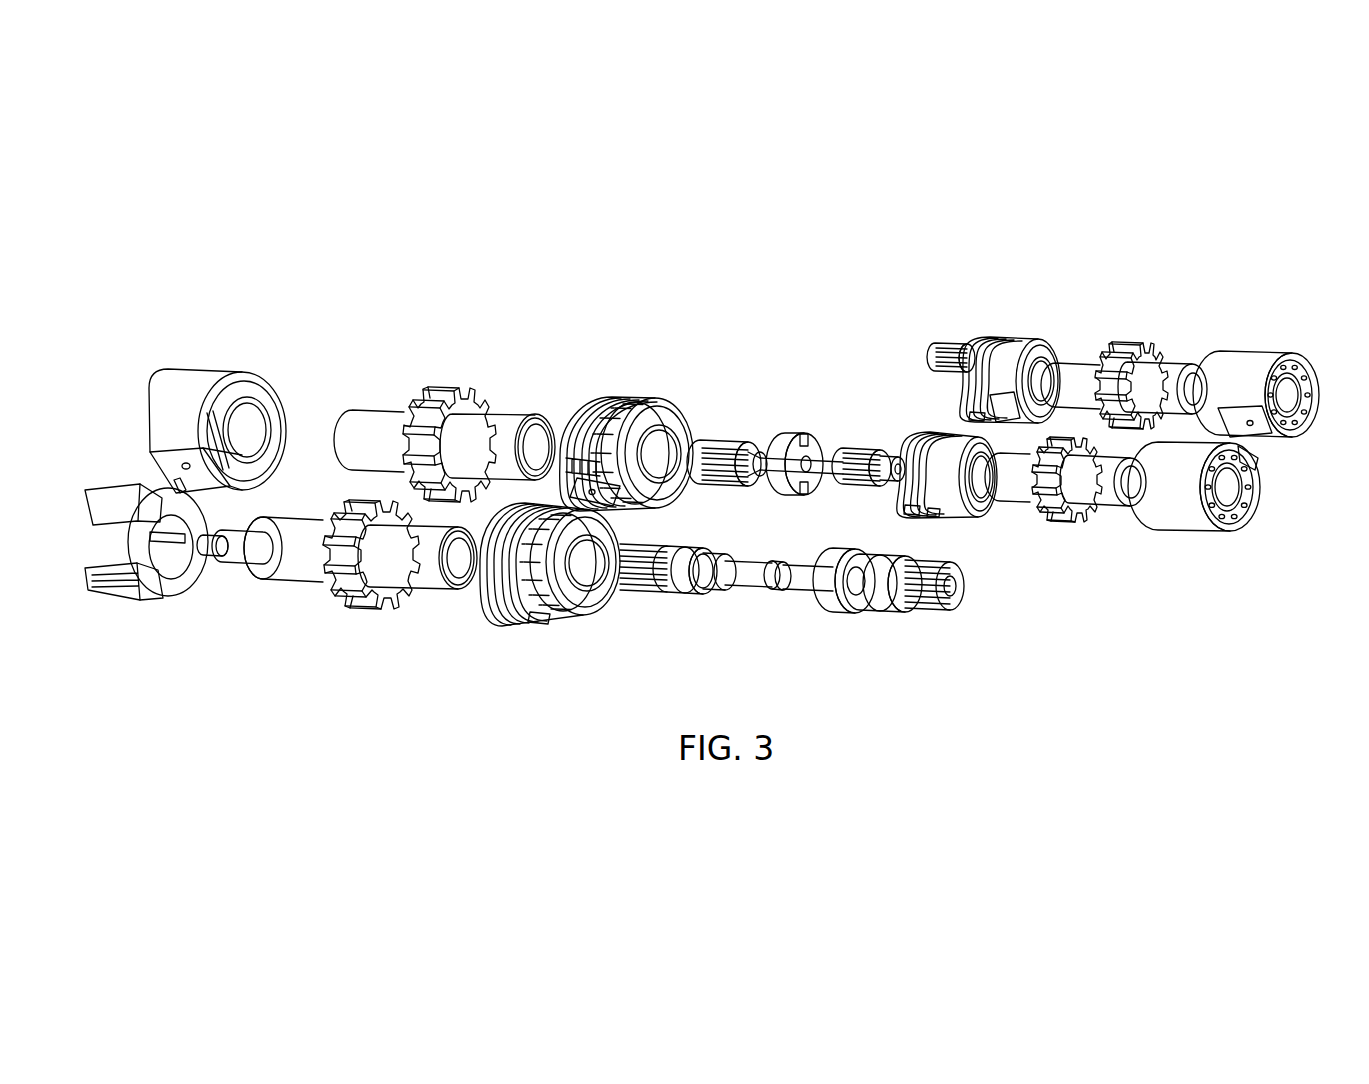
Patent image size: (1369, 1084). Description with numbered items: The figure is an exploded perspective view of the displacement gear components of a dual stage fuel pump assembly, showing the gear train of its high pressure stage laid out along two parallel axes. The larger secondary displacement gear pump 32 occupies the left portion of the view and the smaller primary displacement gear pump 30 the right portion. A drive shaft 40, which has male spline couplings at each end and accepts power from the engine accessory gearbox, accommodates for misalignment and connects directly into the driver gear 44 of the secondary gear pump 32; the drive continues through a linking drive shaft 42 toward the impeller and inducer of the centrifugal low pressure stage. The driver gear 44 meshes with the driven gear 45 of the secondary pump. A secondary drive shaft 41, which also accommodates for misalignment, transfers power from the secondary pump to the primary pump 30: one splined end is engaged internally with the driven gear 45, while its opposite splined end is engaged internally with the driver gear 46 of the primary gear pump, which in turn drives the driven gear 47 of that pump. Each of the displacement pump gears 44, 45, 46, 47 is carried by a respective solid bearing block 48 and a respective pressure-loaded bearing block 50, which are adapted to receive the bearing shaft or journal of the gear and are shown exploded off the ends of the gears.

The primary displacement gear pump 30 is at (1325, 328).
The secondary displacement gear pump 32 is at (727, 357).
The drive shaft 40 is at (742, 590).
The secondary drive shaft 41 is at (836, 456).
The linking drive shaft 42 is at (266, 566).
The driver gear 44 is at (360, 612).
The driven gear 45 is at (468, 390).
The driver gear 46 is at (1068, 522).
The driven gear 47 is at (1158, 352).
The solid bearing block 48 is at (148, 415).
The pressure-loaded bearing block 50 is at (606, 500).